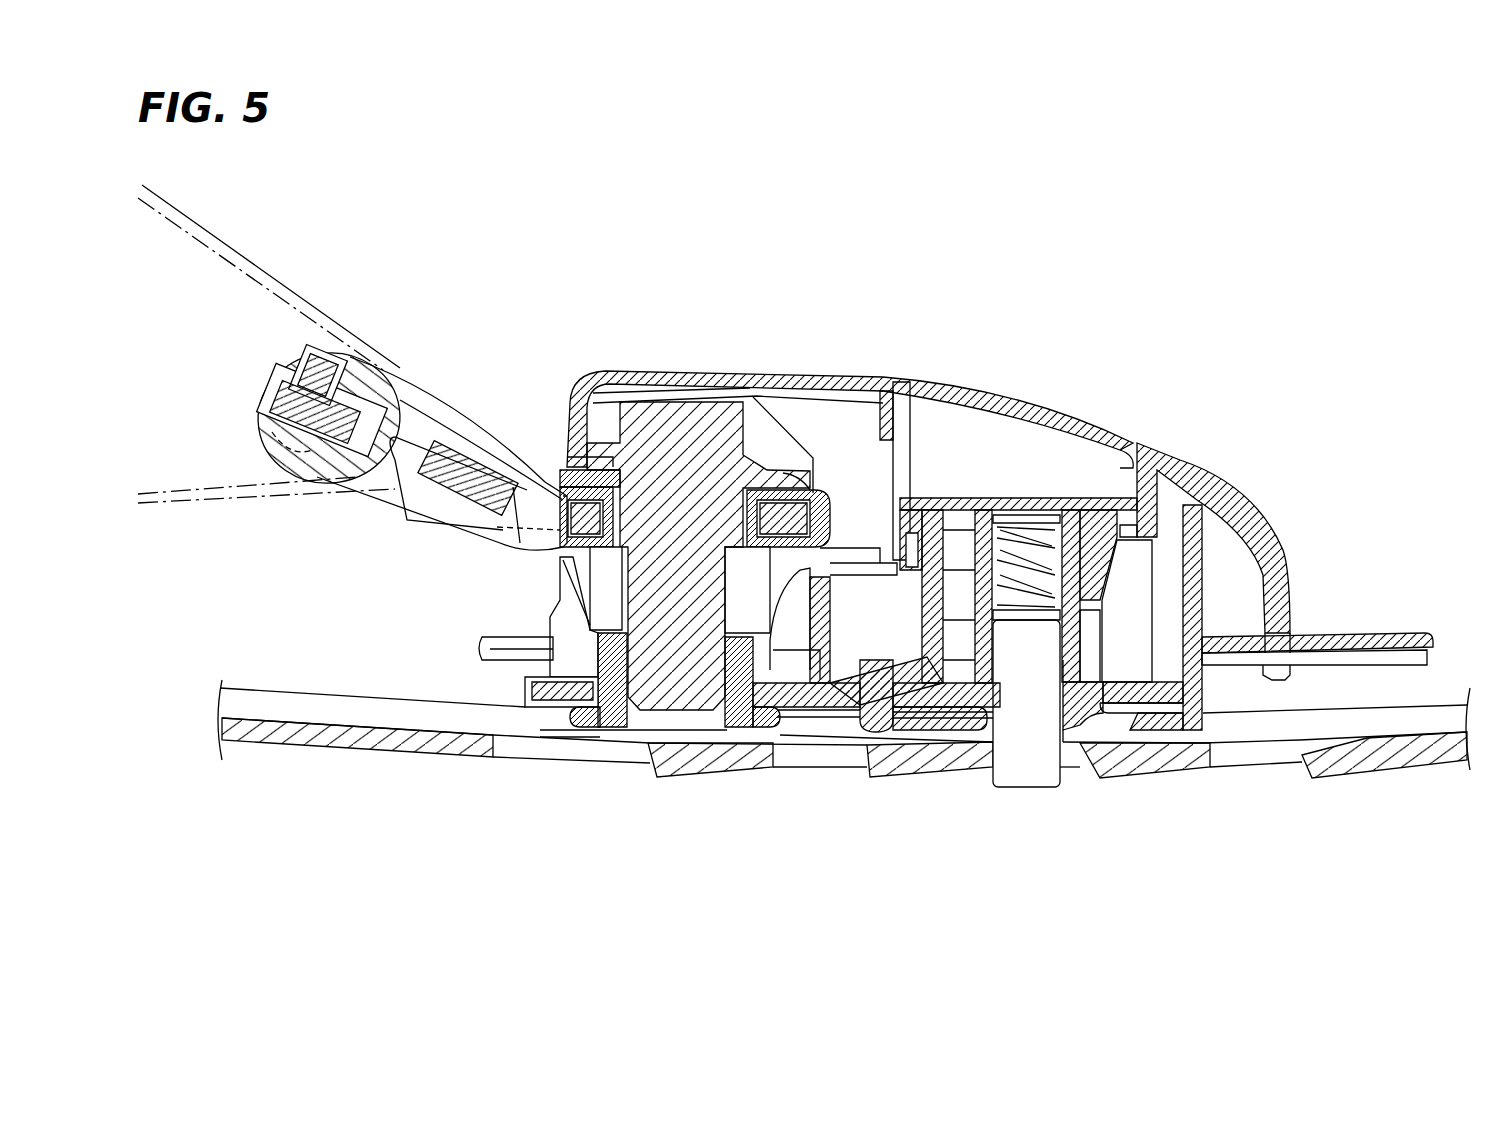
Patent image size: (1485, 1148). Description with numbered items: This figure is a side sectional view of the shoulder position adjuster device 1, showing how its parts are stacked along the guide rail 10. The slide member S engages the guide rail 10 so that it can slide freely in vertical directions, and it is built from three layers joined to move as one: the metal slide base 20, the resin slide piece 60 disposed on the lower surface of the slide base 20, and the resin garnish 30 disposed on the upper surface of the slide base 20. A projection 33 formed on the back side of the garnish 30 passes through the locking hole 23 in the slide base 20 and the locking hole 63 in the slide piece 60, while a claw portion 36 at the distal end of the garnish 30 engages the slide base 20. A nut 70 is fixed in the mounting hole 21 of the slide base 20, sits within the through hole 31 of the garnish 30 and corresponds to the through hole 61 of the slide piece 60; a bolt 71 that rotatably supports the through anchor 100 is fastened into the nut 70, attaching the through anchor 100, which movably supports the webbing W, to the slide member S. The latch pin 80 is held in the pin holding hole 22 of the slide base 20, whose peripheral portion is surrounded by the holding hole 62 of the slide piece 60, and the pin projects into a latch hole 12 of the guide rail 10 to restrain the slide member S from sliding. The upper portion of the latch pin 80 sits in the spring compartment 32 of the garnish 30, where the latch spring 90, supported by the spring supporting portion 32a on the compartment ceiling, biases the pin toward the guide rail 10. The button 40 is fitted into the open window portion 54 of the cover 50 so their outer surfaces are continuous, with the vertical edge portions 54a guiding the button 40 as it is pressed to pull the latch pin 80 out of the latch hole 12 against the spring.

The shoulder position adjuster device 1 is at (641, 254).
The webbing W is at (237, 247).
The through anchor 100 is at (480, 432).
The guide rail 10 is at (1418, 775).
The latch hole 12 is at (1063, 792).
The button 40 is at (1022, 395).
The vertical edge portion 54a is at (908, 425).
The open window portion 54 is at (1133, 445).
The cover 50 is at (1248, 500).
The claw portion 36 is at (1172, 725).
The holding hole 62 is at (1093, 735).
The latch pin 80 is at (1024, 782).
The latch spring 90 is at (1080, 545).
The spring compartment 32 is at (1023, 515).
The spring supporting portion 32a is at (980, 500).
The garnish 30 is at (820, 680).
The locking hole 23 is at (878, 722).
The projection 33 is at (872, 740).
The locking hole 63 is at (872, 712).
The pin holding hole 22 is at (968, 770).
The slide base 20 is at (748, 722).
The slide piece 60 is at (810, 700).
The bolt 71 is at (680, 435).
The through hole 31 is at (603, 623).
The nut 70 is at (613, 728).
The mounting hole 21 is at (598, 727).
The through hole 61 is at (588, 720).
The slide member S is at (703, 868).